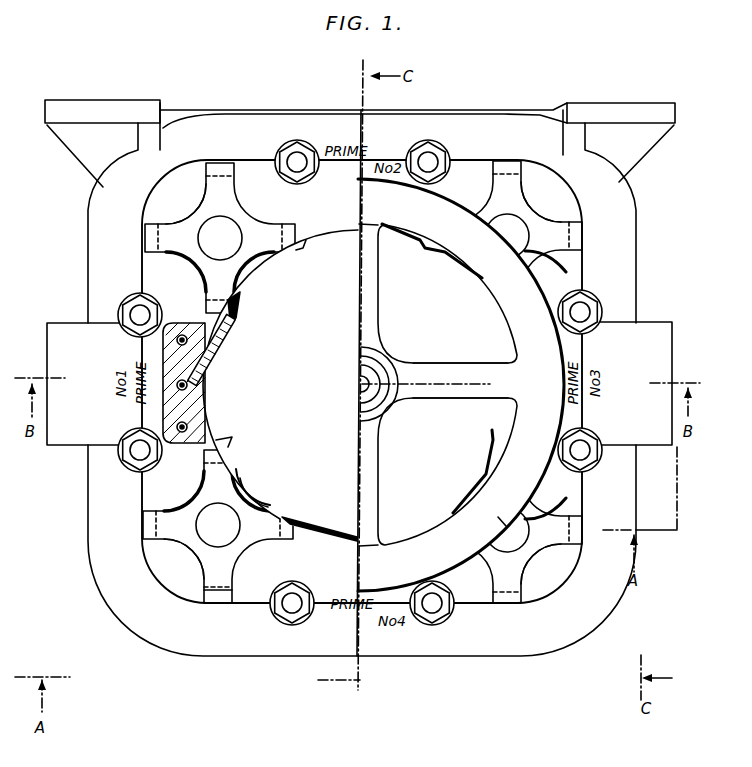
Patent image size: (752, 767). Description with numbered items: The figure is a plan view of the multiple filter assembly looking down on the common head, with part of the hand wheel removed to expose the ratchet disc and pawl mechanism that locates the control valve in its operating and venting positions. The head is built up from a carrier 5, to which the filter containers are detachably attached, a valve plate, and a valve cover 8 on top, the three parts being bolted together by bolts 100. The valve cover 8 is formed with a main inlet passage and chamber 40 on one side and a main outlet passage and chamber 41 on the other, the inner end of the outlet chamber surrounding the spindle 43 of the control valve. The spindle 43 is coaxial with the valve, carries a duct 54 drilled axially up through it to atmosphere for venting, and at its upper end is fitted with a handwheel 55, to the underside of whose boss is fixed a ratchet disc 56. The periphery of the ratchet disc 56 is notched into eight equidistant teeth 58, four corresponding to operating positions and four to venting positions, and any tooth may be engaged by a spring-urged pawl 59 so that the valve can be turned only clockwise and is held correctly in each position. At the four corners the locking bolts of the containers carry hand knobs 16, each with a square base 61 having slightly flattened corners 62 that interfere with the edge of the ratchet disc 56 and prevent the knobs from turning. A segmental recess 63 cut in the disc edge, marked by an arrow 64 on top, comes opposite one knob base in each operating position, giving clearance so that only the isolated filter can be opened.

The carrier 5 is at (565, 634).
The valve cover 8 is at (467, 594).
The hand knobs 16 is at (253, 230).
The main inlet passage and chamber 40 is at (642, 436).
The main outlet passage and chamber 41 is at (65, 433).
The spindle 43 is at (357, 375).
The duct 54 is at (367, 385).
The handwheel 55 is at (452, 372).
The ratchet disc 56 is at (383, 385).
The teeth 58 is at (417, 245).
The spring-urged pawl 59 is at (214, 346).
The base 61 is at (202, 188).
The flattened corners 62 is at (224, 598).
The segmental recess 63 is at (278, 498).
The arrow 64 is at (268, 487).
The bolts 100 is at (301, 165).